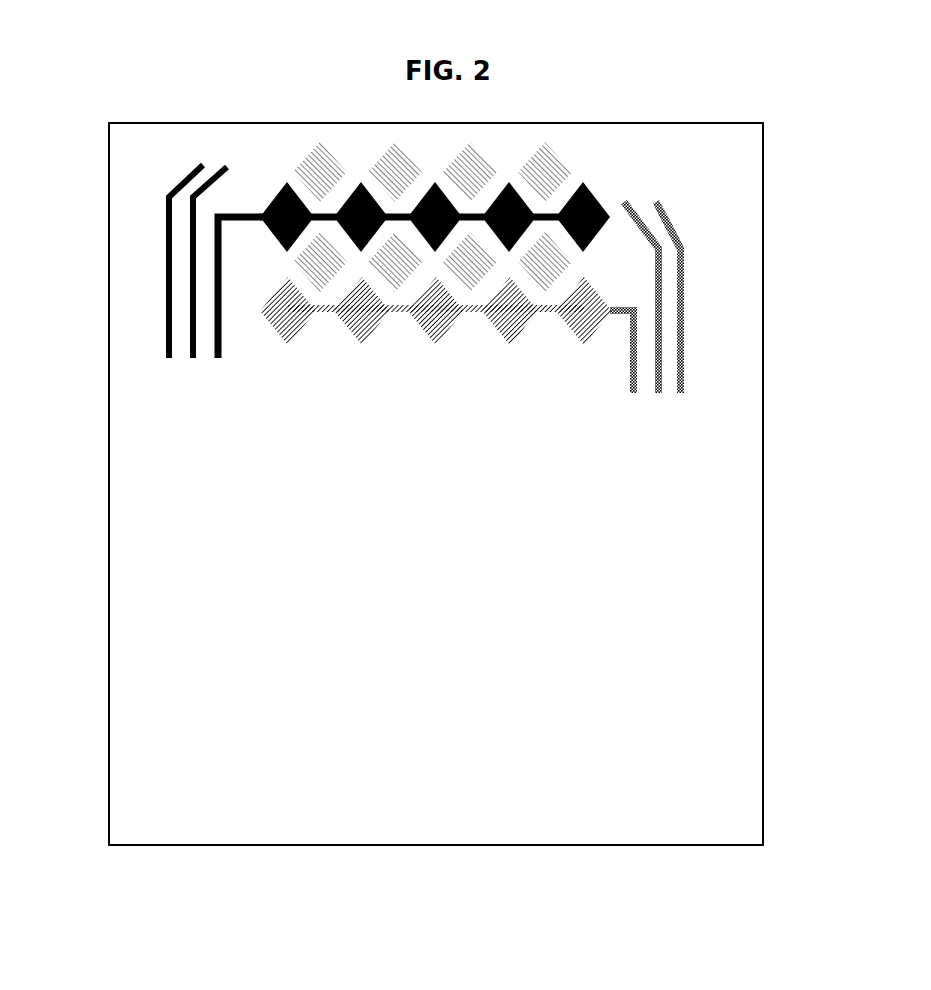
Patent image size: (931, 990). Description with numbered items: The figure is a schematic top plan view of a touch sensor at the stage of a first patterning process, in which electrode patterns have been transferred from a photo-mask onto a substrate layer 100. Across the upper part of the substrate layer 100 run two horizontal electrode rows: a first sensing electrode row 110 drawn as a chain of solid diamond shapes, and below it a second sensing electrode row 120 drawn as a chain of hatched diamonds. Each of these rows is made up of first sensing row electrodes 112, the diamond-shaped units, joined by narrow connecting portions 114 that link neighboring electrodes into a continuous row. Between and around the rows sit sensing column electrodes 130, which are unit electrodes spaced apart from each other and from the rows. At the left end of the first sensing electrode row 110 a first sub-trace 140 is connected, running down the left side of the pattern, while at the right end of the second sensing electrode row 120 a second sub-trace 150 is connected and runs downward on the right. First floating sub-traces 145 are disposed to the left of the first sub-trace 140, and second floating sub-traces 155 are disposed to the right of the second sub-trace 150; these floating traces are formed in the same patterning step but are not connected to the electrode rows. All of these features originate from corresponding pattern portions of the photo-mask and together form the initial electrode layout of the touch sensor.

The substrate layer 100 is at (753, 732).
The first sensing electrode row 110 is at (325, 217).
The first sensing row electrodes 112 is at (277, 202).
The connecting portions 114 is at (300, 262).
The second sensing electrode row 120 is at (548, 307).
The sensing column electrodes 130 is at (558, 160).
The first sub-trace 140 is at (217, 337).
The first floating sub-traces 145 is at (193, 303).
The second sub-trace 150 is at (633, 330).
The second floating sub-traces 155 is at (685, 363).